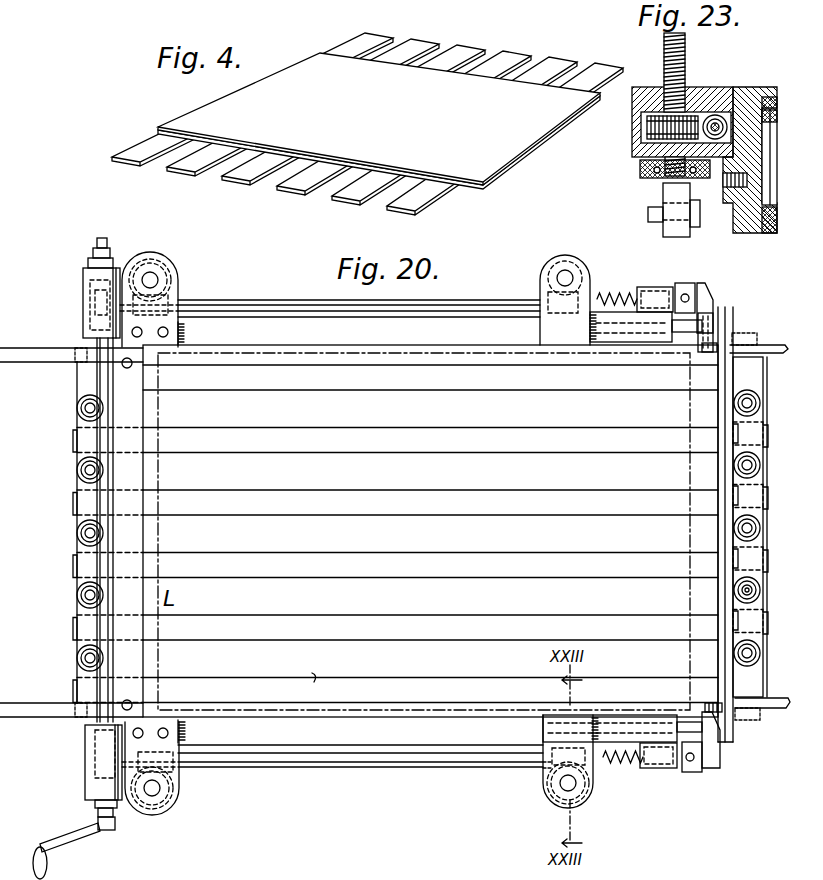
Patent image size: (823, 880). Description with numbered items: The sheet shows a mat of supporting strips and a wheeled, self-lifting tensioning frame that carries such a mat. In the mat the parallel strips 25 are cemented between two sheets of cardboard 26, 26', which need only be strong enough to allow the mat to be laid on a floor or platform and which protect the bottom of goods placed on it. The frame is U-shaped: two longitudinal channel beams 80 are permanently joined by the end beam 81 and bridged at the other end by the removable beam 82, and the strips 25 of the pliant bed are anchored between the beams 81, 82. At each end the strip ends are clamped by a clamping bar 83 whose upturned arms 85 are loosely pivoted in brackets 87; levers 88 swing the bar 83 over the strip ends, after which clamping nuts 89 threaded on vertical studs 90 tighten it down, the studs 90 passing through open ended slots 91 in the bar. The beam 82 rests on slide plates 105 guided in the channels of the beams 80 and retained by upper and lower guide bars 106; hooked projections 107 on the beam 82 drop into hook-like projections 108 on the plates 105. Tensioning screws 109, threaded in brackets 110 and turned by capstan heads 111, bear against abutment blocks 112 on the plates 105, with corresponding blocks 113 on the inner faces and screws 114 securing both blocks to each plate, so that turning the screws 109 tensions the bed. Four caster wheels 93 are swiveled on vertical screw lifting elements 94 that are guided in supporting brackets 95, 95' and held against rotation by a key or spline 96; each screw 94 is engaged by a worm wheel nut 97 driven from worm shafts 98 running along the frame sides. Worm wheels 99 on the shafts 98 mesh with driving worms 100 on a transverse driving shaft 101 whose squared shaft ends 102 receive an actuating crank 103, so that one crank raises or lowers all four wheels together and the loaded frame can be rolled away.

In FIG. 4, the strips 25 is at (367, 124).
In FIG. 20, the strips 25 is at (397, 534).
In FIG. 4, the sheet of cardboard 26 is at (379, 119).
In FIG. 4, the sheet of cardboard 26' is at (379, 154).
In FIG. 23, the longitudinal beams 80 is at (748, 100).
In FIG. 20, the longitudinal beams 80 is at (290, 325).
In FIG. 20, the end beam 81 is at (119, 530).
In FIG. 20, the removable beam 82 is at (725, 518).
In FIG. 20, the clamping bar 83 is at (80, 394).
In FIG. 20, the arms 85 is at (87, 357).
In FIG. 20, the brackets 87 is at (85, 345).
In FIG. 20, the levers 88 is at (40, 697).
In FIG. 20, the clamping nuts 89 is at (80, 473).
In FIG. 20, the vertical studs 90 is at (738, 598).
In FIG. 20, the open ended slots 91 is at (737, 588).
In FIG. 23, the caster wheels 93 is at (670, 198).
In FIG. 23, the screw lifting elements 94 is at (686, 49).
In FIG. 20, the screw lifting elements 94 is at (151, 279).
In FIG. 23, the supporting bracket 95 is at (667, 122).
In FIG. 20, the gear housing bracket 95' is at (196, 569).
In FIG. 23, the key or spline 96 is at (688, 88).
In FIG. 20, the key or spline 96 is at (560, 790).
In FIG. 23, the worm wheel nut 97 is at (712, 113).
In FIG. 20, the worm wheel nut 97 is at (545, 767).
In FIG. 23, the worm shafts 98 is at (717, 140).
In FIG. 20, the worm shafts 98 is at (235, 307).
In FIG. 20, the worm wheels 99 is at (92, 278).
In FIG. 20, the driving worms 100 is at (95, 297).
In FIG. 20, the transverse driving shaft 101 is at (100, 623).
In FIG. 20, the shaft ends 102 is at (107, 242).
In FIG. 20, the actuating crank 103 is at (57, 847).
In FIG. 23, the slide plates 105 is at (771, 148).
In FIG. 20, the slide plates 105 is at (685, 329).
In FIG. 23, the guide bars 106 is at (770, 97).
In FIG. 20, the guide bars 106 is at (600, 320).
In FIG. 20, the hooked projections 107 is at (730, 735).
In FIG. 20, the hook-like projections 108 is at (728, 320).
In FIG. 20, the tensioning screws 109 is at (615, 772).
In FIG. 20, the brackets 110 is at (655, 782).
In FIG. 20, the capstan heads 111 is at (690, 288).
In FIG. 20, the abutment blocks 112 is at (708, 300).
In FIG. 20, the blocks 113 is at (700, 340).
In FIG. 20, the screws 114 is at (713, 702).